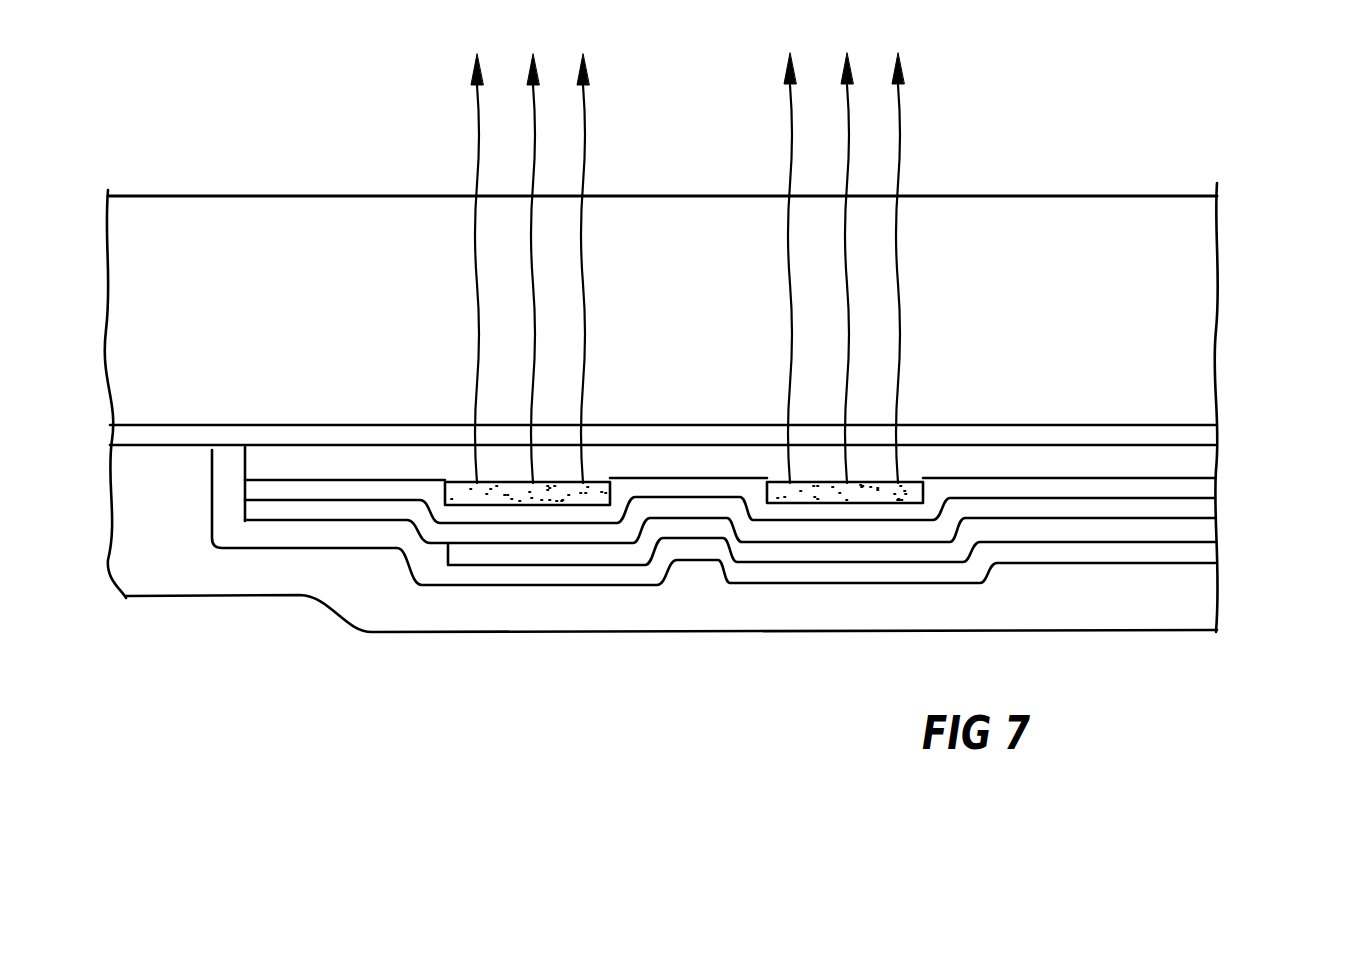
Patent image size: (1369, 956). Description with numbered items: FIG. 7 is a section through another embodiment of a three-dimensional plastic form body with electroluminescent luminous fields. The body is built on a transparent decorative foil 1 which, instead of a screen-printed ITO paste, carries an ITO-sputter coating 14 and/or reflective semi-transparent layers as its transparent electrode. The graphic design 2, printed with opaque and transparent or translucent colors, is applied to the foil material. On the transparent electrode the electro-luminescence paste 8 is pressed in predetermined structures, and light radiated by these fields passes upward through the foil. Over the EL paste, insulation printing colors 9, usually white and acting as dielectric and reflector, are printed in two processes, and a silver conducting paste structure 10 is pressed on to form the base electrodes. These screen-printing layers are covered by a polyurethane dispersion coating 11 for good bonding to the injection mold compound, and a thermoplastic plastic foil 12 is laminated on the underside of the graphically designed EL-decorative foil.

The decorative foil 1 is at (1180, 240).
The ITO-sputter coating 14 is at (1195, 428).
The graphic design 2 is at (1195, 458).
The insulation printing colors 9 is at (1195, 487).
The electro-luminescence paste 8 is at (763, 487).
The silver conducting paste structure 10 is at (1200, 528).
The polyurethane dispersion coating 11 is at (1205, 550).
The thermoplastic plastic foil 12 is at (1195, 600).